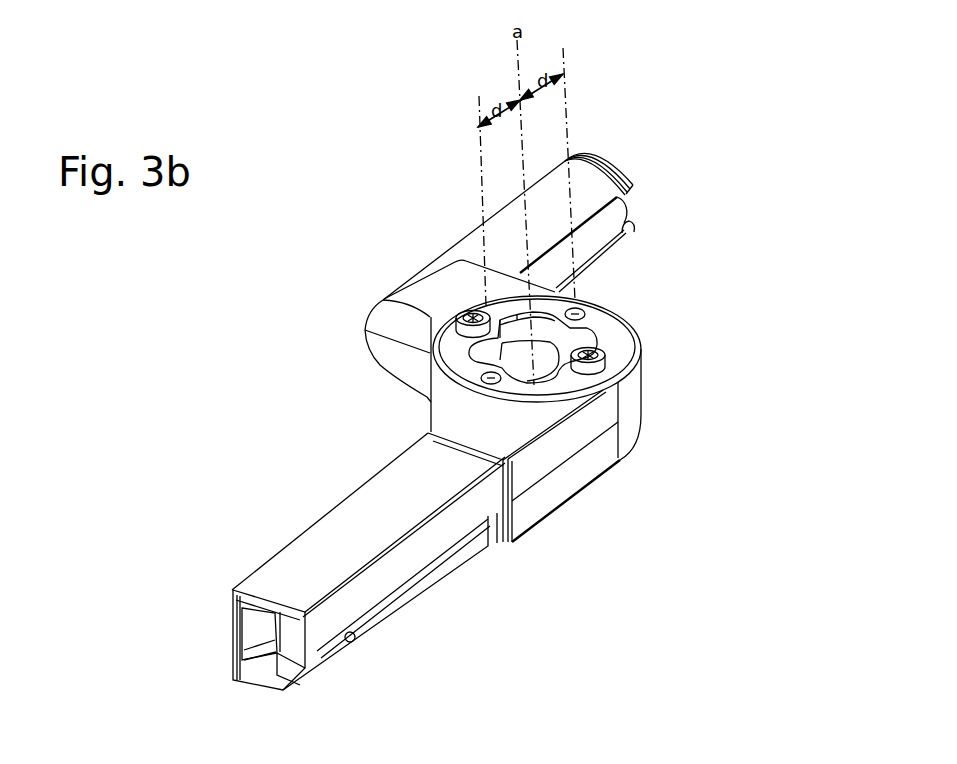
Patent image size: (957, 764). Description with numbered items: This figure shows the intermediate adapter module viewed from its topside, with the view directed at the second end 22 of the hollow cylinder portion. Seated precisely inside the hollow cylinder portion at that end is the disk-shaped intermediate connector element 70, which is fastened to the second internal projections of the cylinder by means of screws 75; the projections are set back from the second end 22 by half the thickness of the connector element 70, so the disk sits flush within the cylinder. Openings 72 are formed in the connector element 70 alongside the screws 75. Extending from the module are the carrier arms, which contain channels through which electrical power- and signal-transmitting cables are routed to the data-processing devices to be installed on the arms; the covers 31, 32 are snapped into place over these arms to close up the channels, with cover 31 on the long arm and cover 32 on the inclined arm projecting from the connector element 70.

The second end 22 is at (542, 400).
The cover 31 is at (242, 658).
The cover 32 is at (602, 235).
The disk-shaped intermediate connector element 70 is at (610, 327).
The holes 72 is at (552, 319).
The screws 75 is at (463, 315).